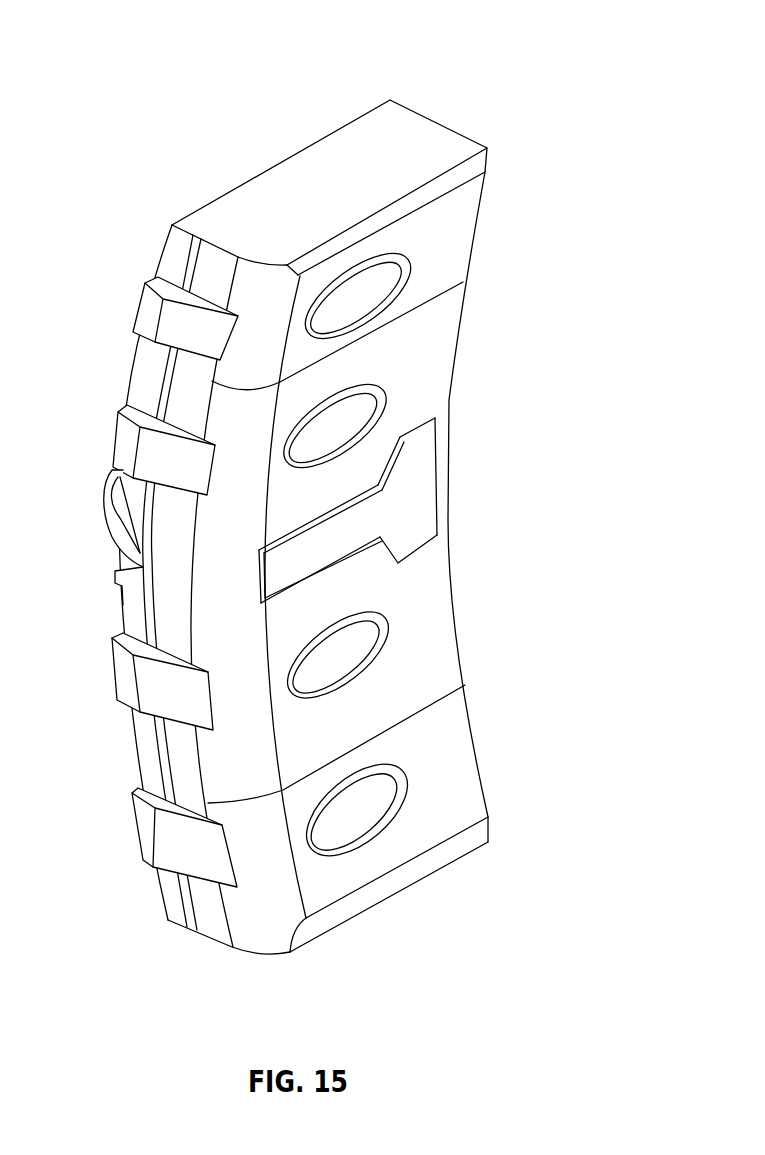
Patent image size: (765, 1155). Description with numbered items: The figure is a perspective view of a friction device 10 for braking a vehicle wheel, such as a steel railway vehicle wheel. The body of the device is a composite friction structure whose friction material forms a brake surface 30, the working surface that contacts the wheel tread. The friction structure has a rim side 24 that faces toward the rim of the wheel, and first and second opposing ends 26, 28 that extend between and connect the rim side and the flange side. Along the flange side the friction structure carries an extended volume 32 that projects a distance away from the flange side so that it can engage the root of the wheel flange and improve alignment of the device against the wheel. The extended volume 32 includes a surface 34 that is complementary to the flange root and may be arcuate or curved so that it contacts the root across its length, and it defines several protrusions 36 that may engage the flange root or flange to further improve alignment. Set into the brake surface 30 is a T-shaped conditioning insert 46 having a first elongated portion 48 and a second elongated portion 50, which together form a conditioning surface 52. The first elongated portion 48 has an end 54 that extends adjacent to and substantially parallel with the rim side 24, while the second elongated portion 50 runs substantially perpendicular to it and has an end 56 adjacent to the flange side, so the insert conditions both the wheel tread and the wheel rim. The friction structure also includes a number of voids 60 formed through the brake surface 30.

The friction device 10 is at (492, 99).
The rim side 24 is at (462, 648).
The first end 26 is at (415, 128).
The second end 28 is at (385, 903).
The brake surface 30 is at (468, 810).
The extended volume 32 is at (262, 288).
The surface 34 is at (268, 928).
The protrusions 36 is at (150, 308).
The conditioning insert 46 is at (422, 441).
The first elongated portion 48 is at (414, 472).
The second elongated portion 50 is at (330, 543).
The conditioning surface 52 is at (380, 511).
The end 54 is at (438, 517).
The end 56 is at (258, 573).
The voids 60 is at (382, 270).